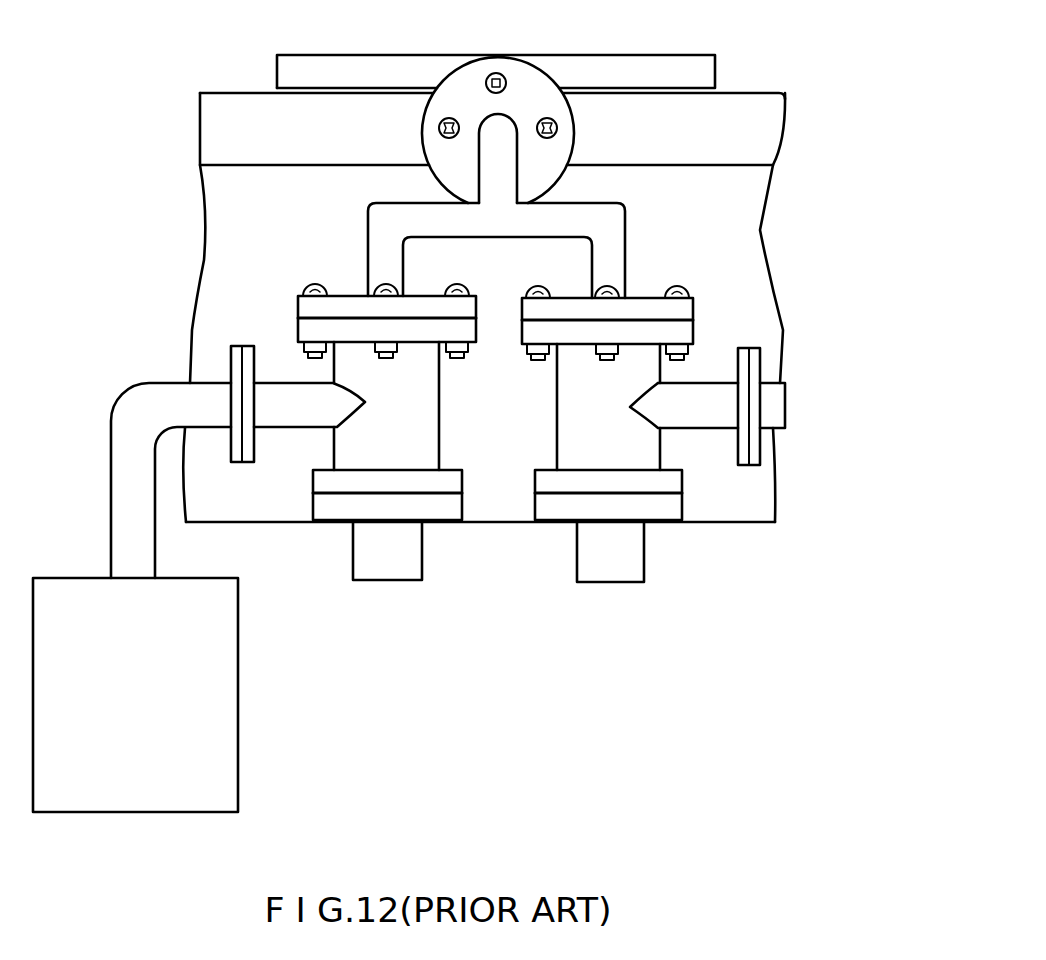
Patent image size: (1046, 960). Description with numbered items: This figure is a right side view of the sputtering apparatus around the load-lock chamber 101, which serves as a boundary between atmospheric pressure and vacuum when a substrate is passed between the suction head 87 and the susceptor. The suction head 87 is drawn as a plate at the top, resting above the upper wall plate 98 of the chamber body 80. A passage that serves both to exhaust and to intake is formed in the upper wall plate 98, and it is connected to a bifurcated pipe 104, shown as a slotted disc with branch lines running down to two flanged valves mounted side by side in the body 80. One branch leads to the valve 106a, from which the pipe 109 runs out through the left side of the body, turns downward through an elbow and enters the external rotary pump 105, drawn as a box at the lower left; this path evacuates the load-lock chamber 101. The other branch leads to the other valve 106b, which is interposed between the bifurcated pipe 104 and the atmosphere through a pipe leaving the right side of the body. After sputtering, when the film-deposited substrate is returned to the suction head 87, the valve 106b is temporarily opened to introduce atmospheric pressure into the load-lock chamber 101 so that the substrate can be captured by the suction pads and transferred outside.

The housing 80 is at (762, 226).
The suction head 87 is at (634, 70).
The upper wall plate 98 is at (742, 112).
The bifurcated pipe 104 is at (453, 88).
The valve 106a is at (343, 446).
The other valve 106b is at (643, 454).
The pipe 109 is at (147, 392).
The load-lock chamber 101 is at (774, 409).
The rotary pump 105 is at (229, 724).